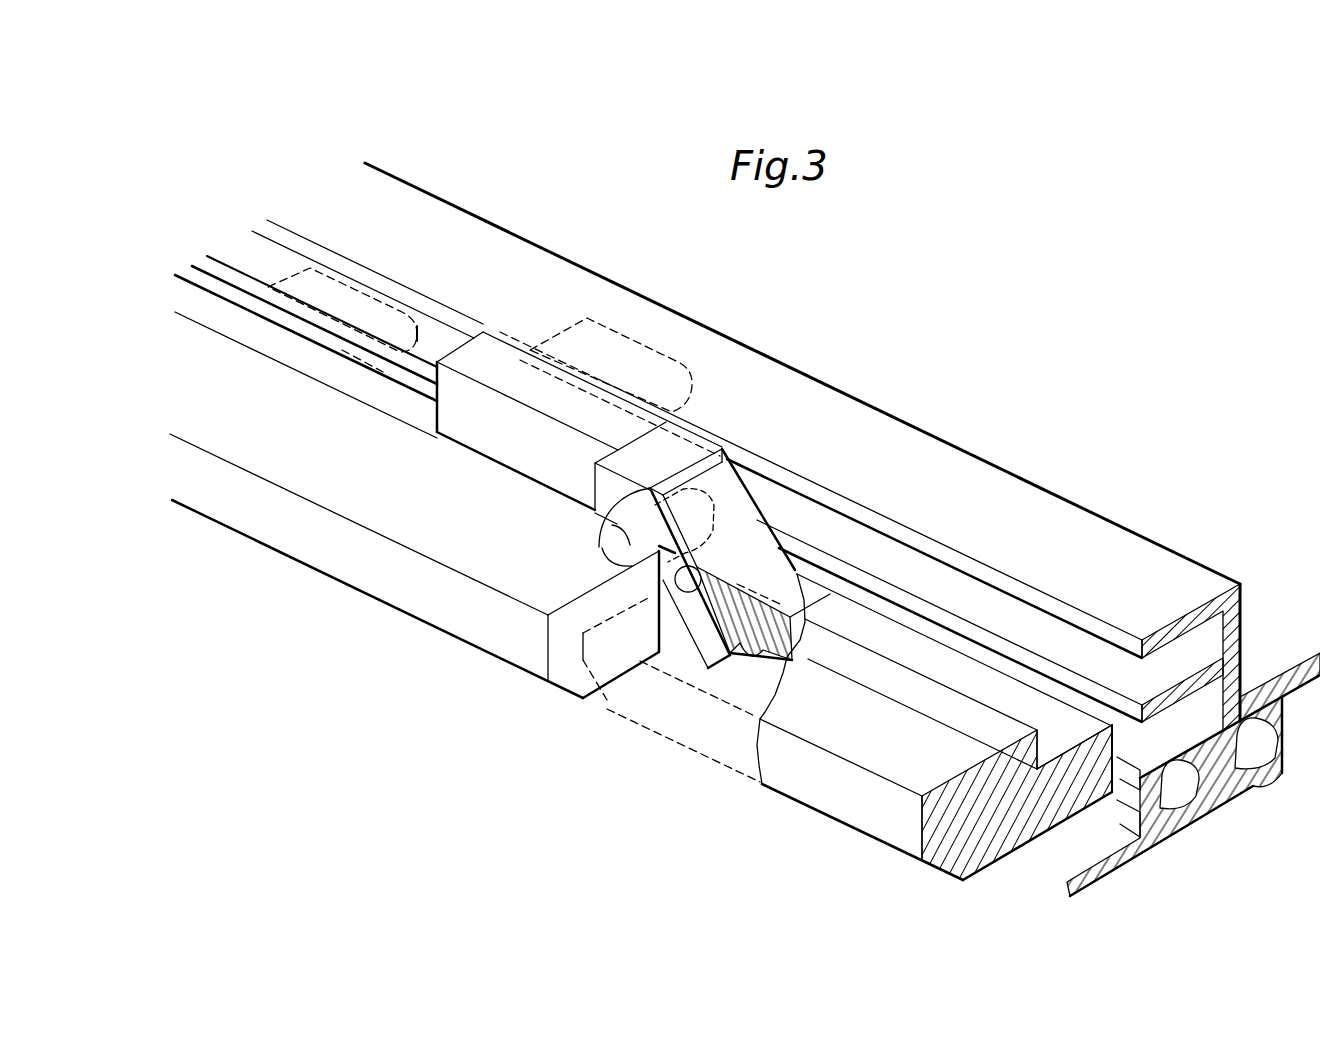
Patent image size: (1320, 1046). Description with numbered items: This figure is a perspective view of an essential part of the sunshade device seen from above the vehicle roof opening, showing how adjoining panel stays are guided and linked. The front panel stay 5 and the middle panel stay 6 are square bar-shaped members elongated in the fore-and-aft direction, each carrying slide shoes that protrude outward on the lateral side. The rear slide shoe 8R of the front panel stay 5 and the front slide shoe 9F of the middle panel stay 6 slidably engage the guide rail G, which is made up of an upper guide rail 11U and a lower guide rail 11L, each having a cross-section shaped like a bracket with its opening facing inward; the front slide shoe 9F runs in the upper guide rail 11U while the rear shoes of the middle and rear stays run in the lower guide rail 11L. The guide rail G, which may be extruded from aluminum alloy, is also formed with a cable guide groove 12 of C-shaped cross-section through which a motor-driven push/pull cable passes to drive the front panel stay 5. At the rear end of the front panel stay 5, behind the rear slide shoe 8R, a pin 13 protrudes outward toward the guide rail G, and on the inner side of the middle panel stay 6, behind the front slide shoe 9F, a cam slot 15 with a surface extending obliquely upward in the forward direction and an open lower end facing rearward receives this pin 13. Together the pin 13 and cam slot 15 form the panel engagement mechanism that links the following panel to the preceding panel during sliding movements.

The guide rail G is at (1020, 472).
The front panel stay 5 is at (417, 597).
The middle panel stay 6 is at (820, 797).
The rear slide shoe 8R is at (367, 290).
The front slide shoe 9F is at (633, 333).
The upper guide rail 11U is at (1213, 630).
The lower guide rail 11L is at (1210, 695).
The cable guide groove 12 is at (1248, 753).
The pin 13 is at (708, 500).
The cam slot 15 is at (750, 560).